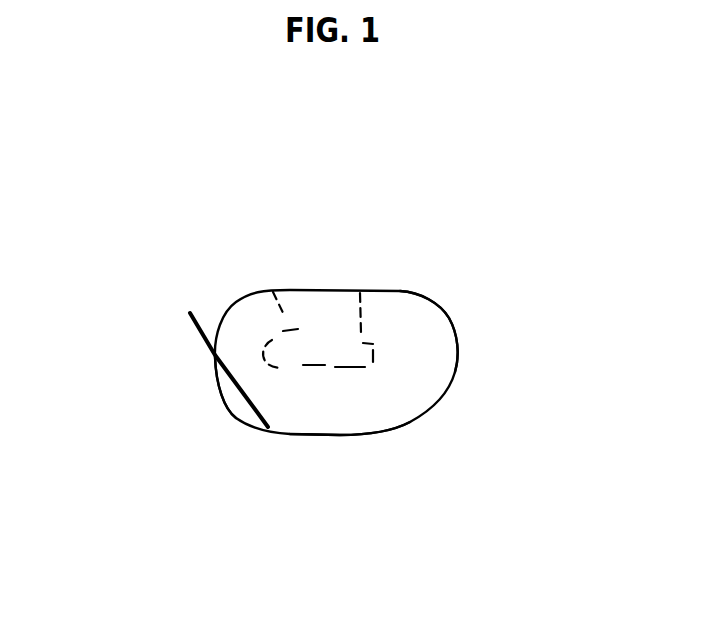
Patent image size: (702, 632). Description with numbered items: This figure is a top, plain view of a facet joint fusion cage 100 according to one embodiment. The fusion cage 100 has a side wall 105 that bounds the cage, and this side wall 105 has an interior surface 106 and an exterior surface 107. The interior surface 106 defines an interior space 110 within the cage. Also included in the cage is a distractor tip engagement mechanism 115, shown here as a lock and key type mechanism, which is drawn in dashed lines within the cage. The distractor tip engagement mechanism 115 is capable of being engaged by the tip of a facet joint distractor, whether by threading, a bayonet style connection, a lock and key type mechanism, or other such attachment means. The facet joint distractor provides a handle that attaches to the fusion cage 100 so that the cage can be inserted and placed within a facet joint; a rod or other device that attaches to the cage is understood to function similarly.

The facet joint fusion cage 100 is at (322, 530).
The side wall 105 is at (545, 330).
The interior surface 106 is at (190, 313).
The exterior surface 107 is at (142, 457).
The interior space 110 is at (500, 485).
The distractor tip engagement mechanism 115 is at (445, 193).